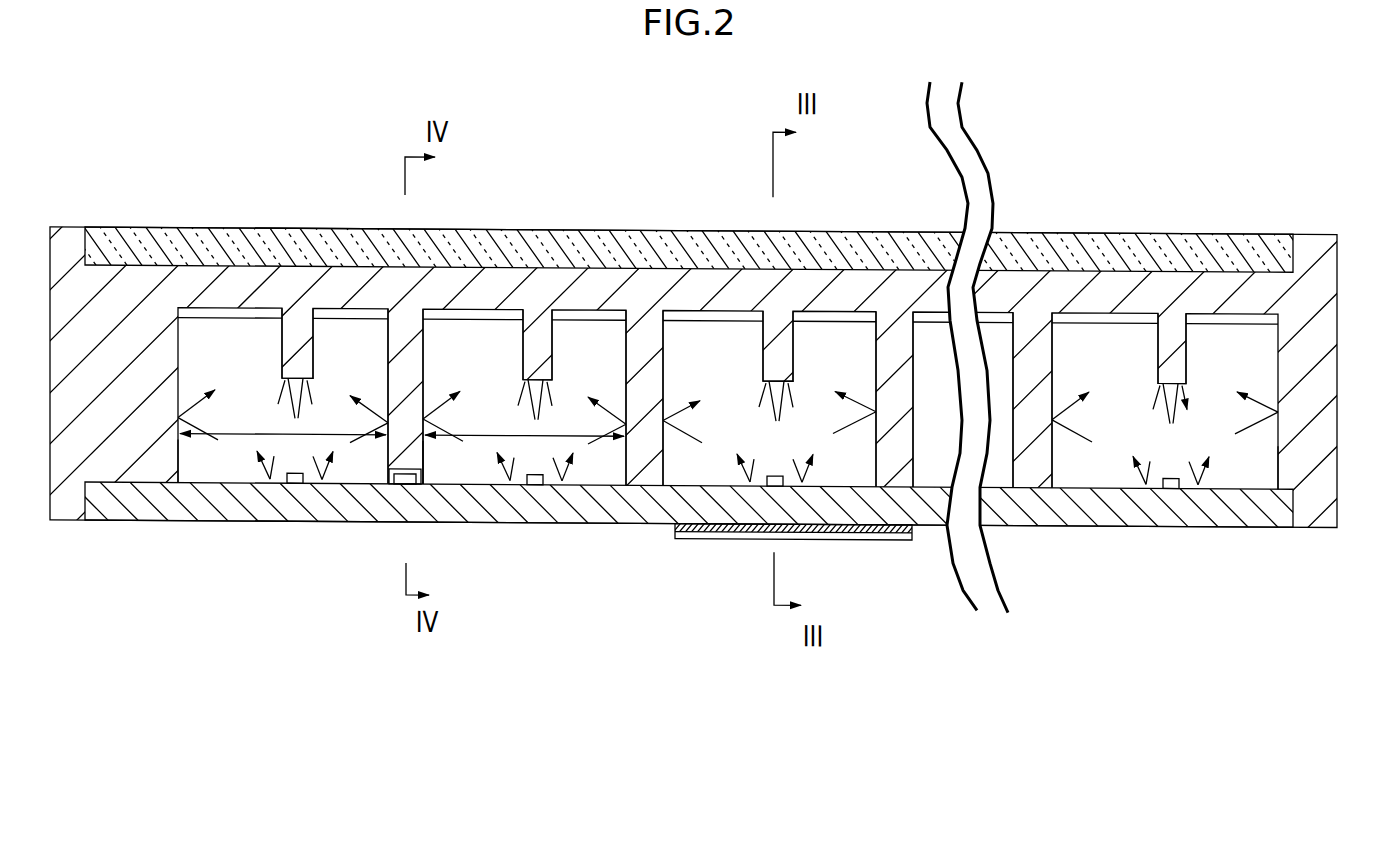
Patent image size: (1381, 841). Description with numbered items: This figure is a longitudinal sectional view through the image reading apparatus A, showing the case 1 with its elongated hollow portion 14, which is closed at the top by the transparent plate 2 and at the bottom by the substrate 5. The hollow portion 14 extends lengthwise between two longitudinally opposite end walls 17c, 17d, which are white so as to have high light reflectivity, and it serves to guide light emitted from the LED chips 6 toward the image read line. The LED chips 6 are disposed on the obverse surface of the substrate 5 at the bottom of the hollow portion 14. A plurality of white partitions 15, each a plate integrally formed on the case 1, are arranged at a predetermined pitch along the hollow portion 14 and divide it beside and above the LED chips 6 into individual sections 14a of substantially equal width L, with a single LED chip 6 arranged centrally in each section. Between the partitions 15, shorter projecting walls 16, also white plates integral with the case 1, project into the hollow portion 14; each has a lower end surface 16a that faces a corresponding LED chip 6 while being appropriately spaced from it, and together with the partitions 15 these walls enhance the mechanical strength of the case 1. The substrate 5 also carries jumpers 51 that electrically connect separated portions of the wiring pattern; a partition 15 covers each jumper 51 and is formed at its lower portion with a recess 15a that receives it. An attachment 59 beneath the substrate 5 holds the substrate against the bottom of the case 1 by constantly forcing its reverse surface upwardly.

The case 1 is at (1335, 281).
The transparent plate 2 is at (1103, 240).
The substrate 5 is at (642, 512).
The LED chips 6 is at (297, 485).
The hollow portion 14 is at (712, 338).
The individual sections 14a is at (353, 328).
The partitions 15 is at (415, 343).
The recess 15a is at (423, 487).
The projecting walls 16 is at (293, 343).
The lower end surface 16a is at (288, 415).
The end wall 17c is at (182, 443).
The end wall 17d is at (1278, 458).
The jumpers 51 is at (412, 485).
The attachments 59 is at (745, 533).
The image reading apparatus A is at (1264, 104).
The width L is at (402, 420).